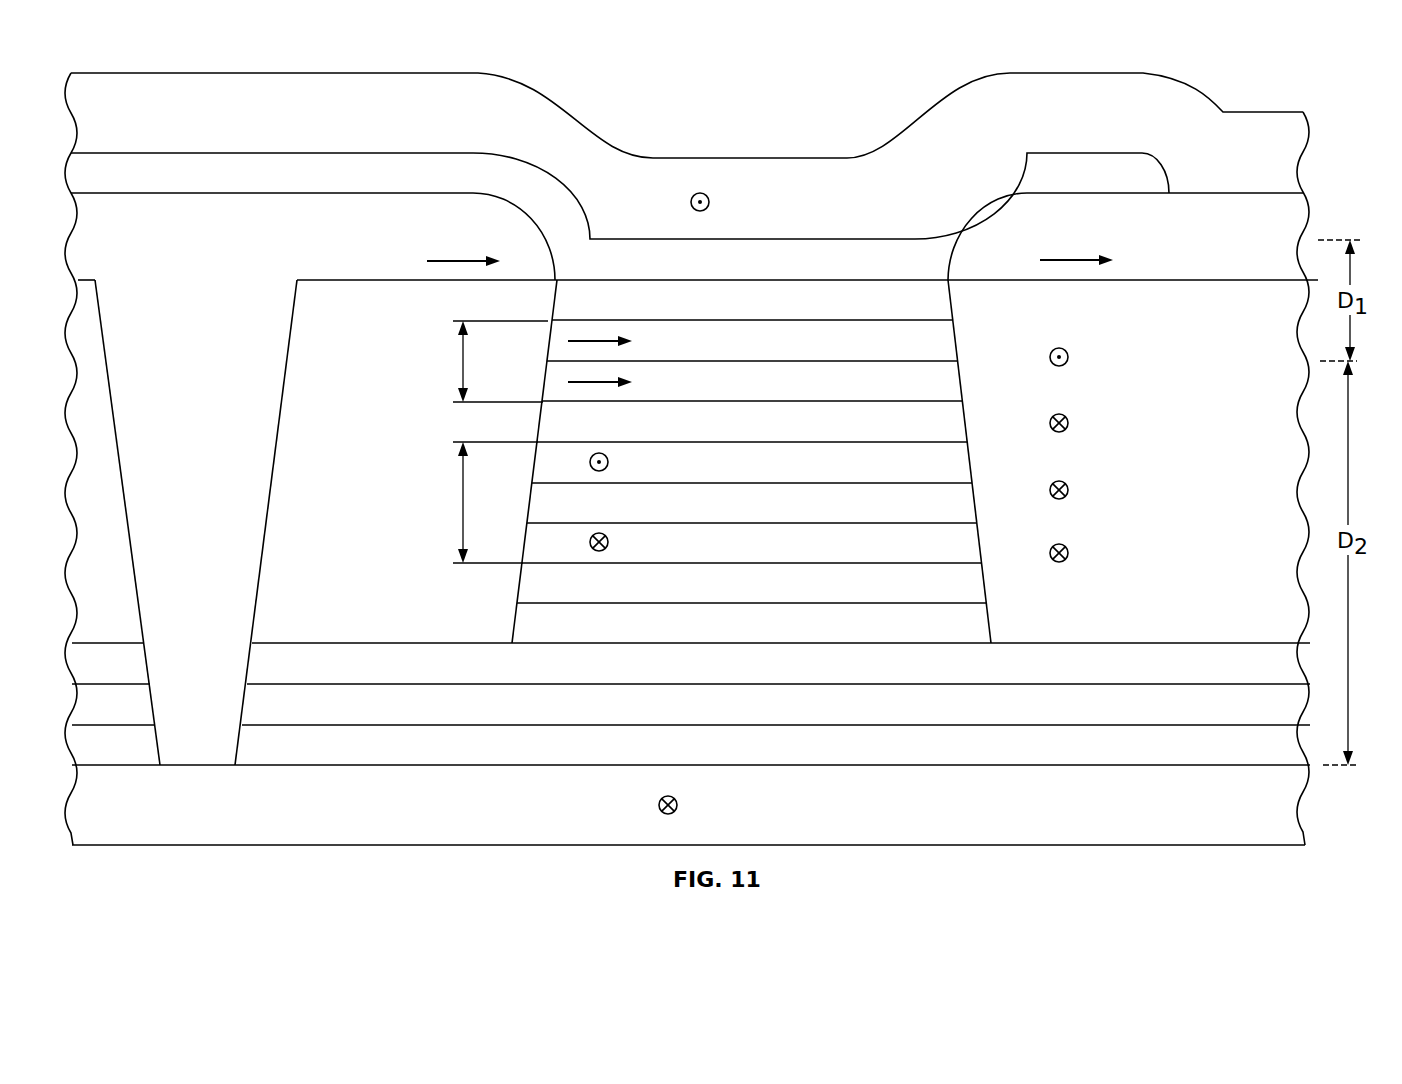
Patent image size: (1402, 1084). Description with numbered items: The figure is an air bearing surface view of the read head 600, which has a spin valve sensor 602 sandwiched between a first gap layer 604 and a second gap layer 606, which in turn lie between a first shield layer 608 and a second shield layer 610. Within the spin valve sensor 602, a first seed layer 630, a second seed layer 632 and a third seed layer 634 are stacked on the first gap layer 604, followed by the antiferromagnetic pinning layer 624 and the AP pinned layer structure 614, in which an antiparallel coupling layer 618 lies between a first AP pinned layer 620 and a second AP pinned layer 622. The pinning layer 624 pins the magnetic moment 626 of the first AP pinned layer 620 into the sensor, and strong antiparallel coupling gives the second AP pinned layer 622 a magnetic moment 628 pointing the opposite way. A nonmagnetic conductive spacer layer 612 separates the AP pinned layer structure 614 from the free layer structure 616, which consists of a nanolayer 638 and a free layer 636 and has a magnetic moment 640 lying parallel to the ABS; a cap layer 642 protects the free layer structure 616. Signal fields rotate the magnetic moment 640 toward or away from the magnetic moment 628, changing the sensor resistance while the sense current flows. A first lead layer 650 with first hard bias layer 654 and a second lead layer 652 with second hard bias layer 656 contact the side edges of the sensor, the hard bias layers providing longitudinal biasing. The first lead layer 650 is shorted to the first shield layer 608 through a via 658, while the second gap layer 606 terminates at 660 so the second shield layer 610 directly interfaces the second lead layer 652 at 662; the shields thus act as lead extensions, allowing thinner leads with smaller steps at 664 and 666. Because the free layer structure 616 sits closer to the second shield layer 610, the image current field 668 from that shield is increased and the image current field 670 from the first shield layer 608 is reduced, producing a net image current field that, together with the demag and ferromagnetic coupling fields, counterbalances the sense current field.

The read head 600 is at (775, 133).
The spin valve sensor 602 is at (283, 280).
The first gap layer 604 is at (927, 755).
The second gap layer 606 is at (925, 277).
The first shield layer 608 is at (927, 818).
The second shield layer 610 is at (863, 217).
The spacer layer 612 is at (927, 432).
The AP pinned layer structure 614 is at (460, 517).
The free layer structure 616 is at (460, 368).
The antiparallel coupling layer 618 is at (927, 513).
The first AP pinned layer 620 is at (927, 553).
The second AP pinned layer 622 is at (927, 473).
The antiferromagnetic pinning layer 624 is at (927, 593).
The magnetic moment of the first AP pinned layer 626 is at (591, 549).
The magnetic moment of the second AP pinned layer 628 is at (591, 469).
The first seed layer 630 is at (927, 715).
The second seed layer 632 is at (927, 674).
The third seed layer 634 is at (927, 633).
The free layer 636 is at (927, 351).
The nanolayer 638 is at (927, 391).
The magnetic moment of the free layer structure 640 is at (588, 340).
The cap layer 642 is at (927, 311).
The first lead layer 650 is at (492, 237).
The second lead layer 652 is at (1197, 237).
The first hard bias layer 654 is at (365, 486).
The second hard bias layer 656 is at (1222, 483).
The via 658 is at (150, 318).
The termination of the second read gap layer 660 is at (1162, 160).
The interface of second shield layer and second lead layer 662 is at (1270, 192).
The step of the first lead layer 664 is at (507, 202).
The step of the second lead layer 666 is at (997, 203).
The image current field from the second shield layer 668 is at (690, 202).
The image current field from the first shield layer 670 is at (657, 803).